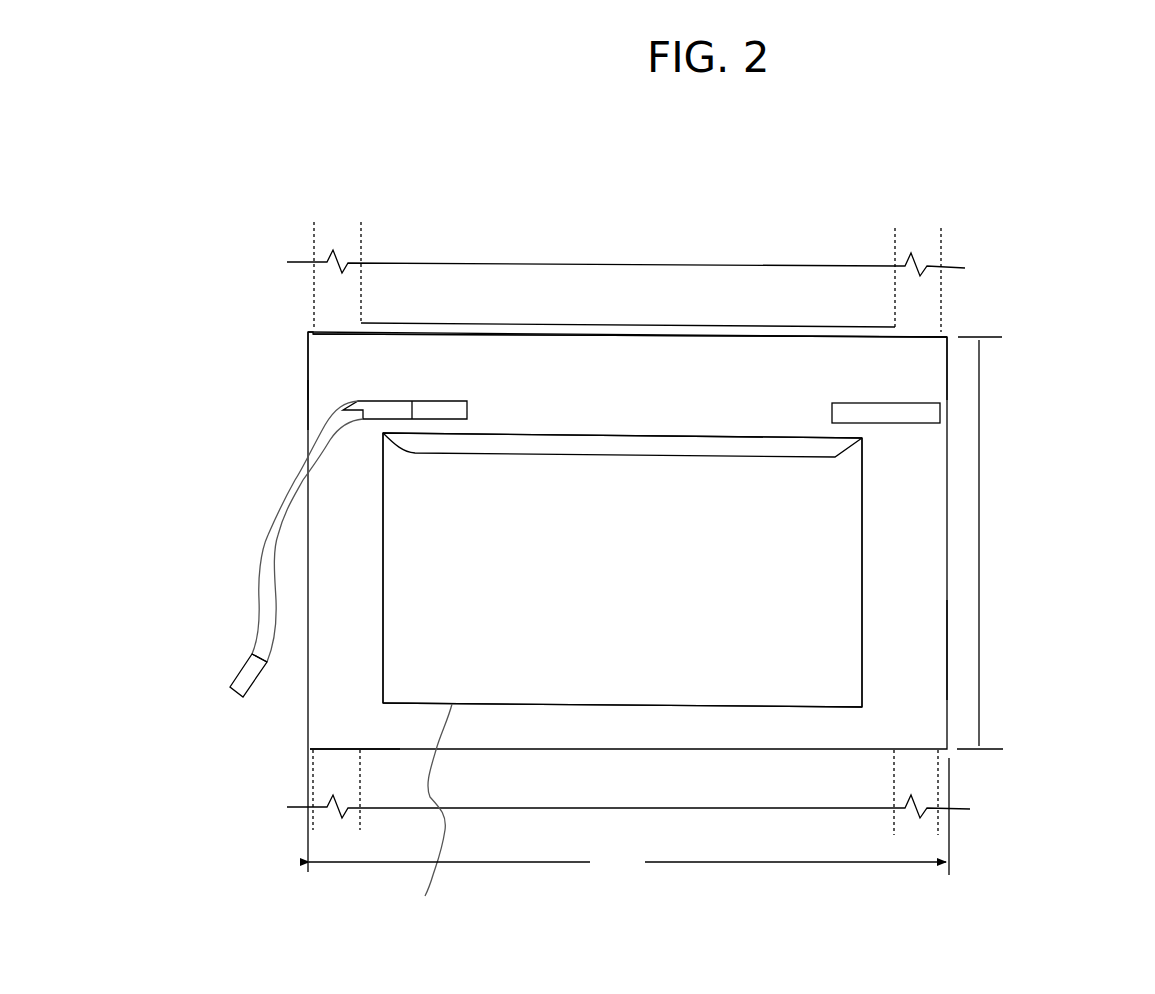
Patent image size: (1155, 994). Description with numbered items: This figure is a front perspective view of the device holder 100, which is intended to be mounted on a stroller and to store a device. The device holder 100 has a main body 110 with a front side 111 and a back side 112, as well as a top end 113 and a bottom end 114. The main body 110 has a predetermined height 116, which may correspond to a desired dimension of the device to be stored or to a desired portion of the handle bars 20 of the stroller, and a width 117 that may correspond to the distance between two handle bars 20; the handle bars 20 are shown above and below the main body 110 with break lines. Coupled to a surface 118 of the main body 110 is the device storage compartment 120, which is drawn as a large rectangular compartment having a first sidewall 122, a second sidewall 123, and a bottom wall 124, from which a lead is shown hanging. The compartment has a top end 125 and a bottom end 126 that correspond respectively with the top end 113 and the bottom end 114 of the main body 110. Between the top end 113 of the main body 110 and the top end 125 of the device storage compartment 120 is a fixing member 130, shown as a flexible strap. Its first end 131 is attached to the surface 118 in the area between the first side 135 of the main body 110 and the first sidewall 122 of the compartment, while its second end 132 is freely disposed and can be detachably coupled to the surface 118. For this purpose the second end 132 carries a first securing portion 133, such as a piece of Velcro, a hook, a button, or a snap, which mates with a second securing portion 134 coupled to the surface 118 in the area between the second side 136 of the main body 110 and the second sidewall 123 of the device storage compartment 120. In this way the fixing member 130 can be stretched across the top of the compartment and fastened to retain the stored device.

The handle bars 20 is at (313, 292).
The device holder 100 is at (1013, 327).
The main body 110 is at (947, 585).
The front side 111 is at (791, 362).
The back side 112 is at (668, 324).
The top end 113 is at (276, 347).
The bottom end 114 is at (277, 748).
The height 116 is at (981, 543).
The width 117 is at (627, 862).
The surface 118 is at (915, 650).
The device storage compartment 120 is at (870, 467).
The first sidewall 122 is at (383, 522).
The second sidewall 123 is at (862, 495).
The bottom wall 124 is at (426, 813).
The top end 125 is at (377, 442).
The bottom end 126 is at (377, 705).
The fixing member 130 is at (257, 570).
The first end 131 is at (386, 395).
The second end 132 is at (240, 651).
The first securing portion 133 is at (238, 672).
The second securing portion 134 is at (925, 415).
The first side 135 is at (308, 392).
The second side 136 is at (947, 365).